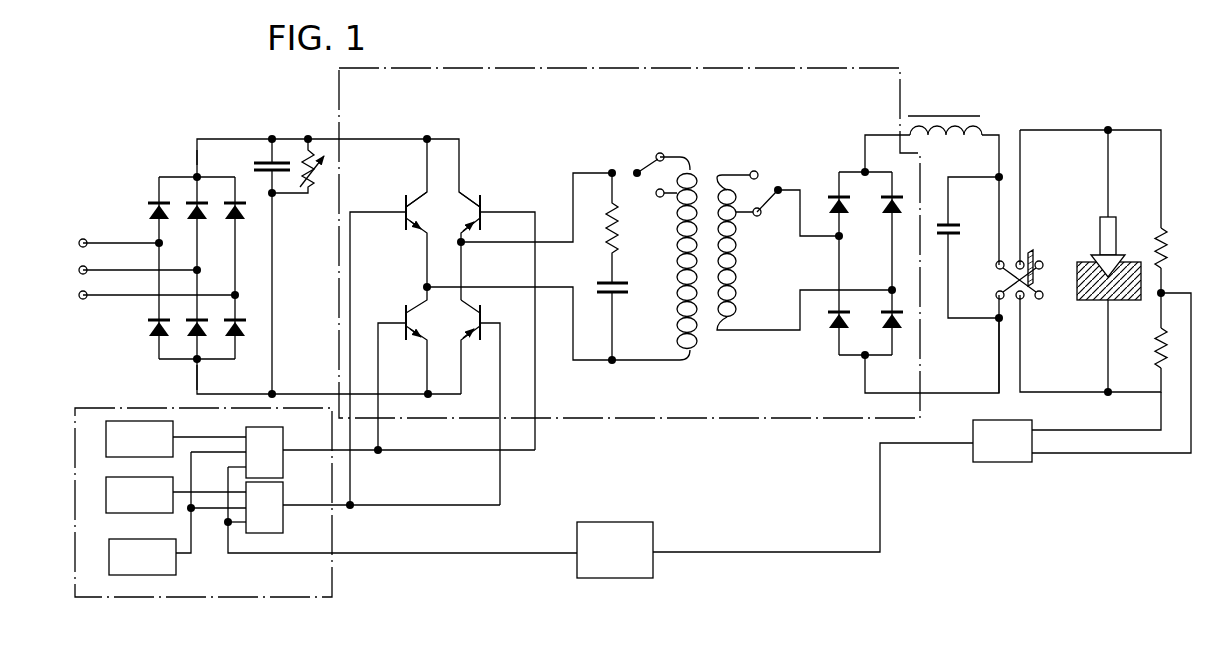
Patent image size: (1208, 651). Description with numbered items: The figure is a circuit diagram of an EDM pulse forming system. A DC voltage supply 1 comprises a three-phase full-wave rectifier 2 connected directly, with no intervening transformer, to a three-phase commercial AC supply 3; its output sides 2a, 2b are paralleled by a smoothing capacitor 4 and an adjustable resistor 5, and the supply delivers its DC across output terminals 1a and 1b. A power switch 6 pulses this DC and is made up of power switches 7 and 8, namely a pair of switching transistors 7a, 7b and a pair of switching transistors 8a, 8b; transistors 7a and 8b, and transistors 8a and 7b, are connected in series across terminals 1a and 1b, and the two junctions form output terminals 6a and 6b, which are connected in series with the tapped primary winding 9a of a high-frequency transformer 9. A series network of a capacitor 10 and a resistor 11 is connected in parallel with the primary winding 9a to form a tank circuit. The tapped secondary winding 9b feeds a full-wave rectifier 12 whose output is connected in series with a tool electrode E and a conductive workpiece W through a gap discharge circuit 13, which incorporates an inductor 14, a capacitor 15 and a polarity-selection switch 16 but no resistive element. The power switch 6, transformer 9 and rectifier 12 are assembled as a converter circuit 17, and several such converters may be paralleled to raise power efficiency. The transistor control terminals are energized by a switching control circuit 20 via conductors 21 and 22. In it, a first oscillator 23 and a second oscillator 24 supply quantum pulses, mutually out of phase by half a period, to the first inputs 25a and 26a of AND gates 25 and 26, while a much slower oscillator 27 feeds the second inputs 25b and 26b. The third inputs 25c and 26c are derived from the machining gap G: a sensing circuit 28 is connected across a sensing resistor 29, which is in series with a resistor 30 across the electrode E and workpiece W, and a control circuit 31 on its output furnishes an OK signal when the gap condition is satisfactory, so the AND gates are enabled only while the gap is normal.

The DC voltage supply 1 is at (182, 163).
The output terminal 1a is at (325, 137).
The output terminal 1b is at (302, 389).
The full-wave rectifier 2 is at (166, 190).
The output terminal of rectifier 2a is at (195, 155).
The output terminal of rectifier 2b is at (197, 377).
The three-phase commercial AC supply 3 is at (73, 269).
The smoothing capacitor 4 is at (262, 162).
The adjustable resistor 5 is at (302, 162).
The power switch 6 is at (442, 320).
The output terminal of power switch 6a is at (557, 242).
The output terminal of power switch 6b is at (557, 287).
The power switch 7 is at (365, 270).
The switching transistor 7a is at (402, 207).
The switching transistor 7b is at (484, 315).
The power switch 8 is at (470, 272).
The switching transistor 8a is at (478, 202).
The switching transistor 8b is at (418, 308).
The high-frequency transformer 9 is at (750, 245).
The primary winding 9a is at (666, 360).
The secondary winding 9b is at (740, 310).
The capacitor 10 is at (628, 292).
The resistor 11 is at (618, 228).
The full-wave rectifier 12 is at (849, 158).
The gap discharge circuit 13 is at (985, 138).
The inductor 14 is at (948, 113).
The capacitor 15 is at (960, 227).
The polarity-selection switch 16 is at (997, 277).
The converter circuit 17 is at (580, 73).
The switching control circuit 20 is at (186, 489).
The conductor 21 is at (377, 455).
The conductor 22 is at (341, 510).
The first oscillator 23 is at (106, 437).
The second oscillator 24 is at (106, 493).
The AND gate 25 is at (283, 435).
The first input of AND gate 25a is at (187, 438).
The second input of AND gate 25b is at (188, 510).
The third input of AND gate 25c is at (228, 480).
The AND gate 26 is at (283, 494).
The first input of AND gate 26a is at (198, 495).
The second input of AND gate 26b is at (210, 510).
The third input of AND gate 26c is at (232, 524).
The oscillator 27 is at (109, 557).
The sensing circuit 28 is at (984, 463).
The sensing resistor 29 is at (1155, 343).
The resistor 30 is at (1165, 237).
The control circuit 31 is at (617, 523).
The tool electrode E is at (1100, 228).
The machining gap G is at (1077, 297).
The workpiece W is at (1095, 302).